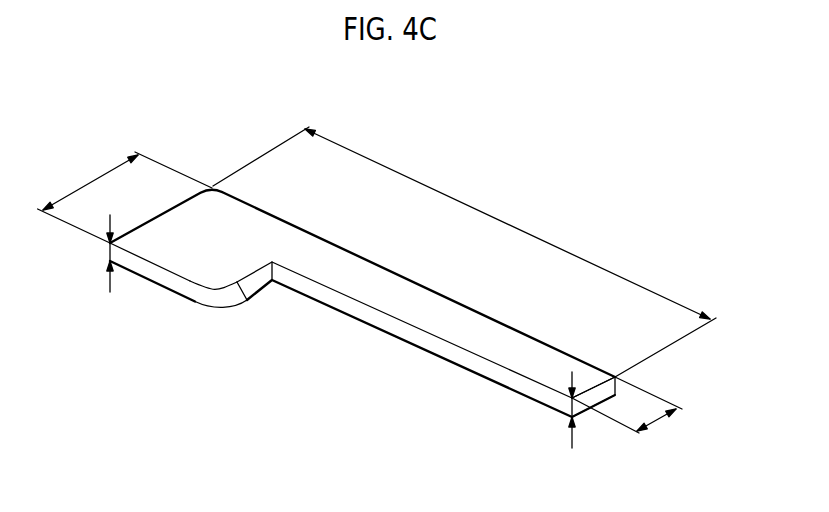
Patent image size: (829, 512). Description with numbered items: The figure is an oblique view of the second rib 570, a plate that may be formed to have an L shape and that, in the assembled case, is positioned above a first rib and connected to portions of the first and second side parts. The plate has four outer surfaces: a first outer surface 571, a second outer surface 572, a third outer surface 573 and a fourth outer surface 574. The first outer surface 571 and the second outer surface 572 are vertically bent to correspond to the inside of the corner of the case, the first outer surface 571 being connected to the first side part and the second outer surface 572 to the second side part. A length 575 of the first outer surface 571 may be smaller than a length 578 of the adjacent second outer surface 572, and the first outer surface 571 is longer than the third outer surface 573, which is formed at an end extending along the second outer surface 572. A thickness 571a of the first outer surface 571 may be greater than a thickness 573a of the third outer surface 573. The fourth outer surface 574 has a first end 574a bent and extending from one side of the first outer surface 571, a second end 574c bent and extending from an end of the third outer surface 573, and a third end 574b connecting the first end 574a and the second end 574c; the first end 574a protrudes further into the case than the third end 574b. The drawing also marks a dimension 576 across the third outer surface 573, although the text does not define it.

The second rib 570 is at (687, 134).
The first outer surface 571 is at (180, 204).
The thickness of first outer surface 571a is at (82, 260).
The second outer surface 572 is at (413, 282).
The third outer surface 573 is at (601, 394).
The thickness of third outer surface 573a is at (600, 421).
The fourth outer surface 574 is at (328, 367).
The first end of fourth outer surface 574a is at (170, 291).
The third end of fourth outer surface 574b is at (247, 296).
The second end of fourth outer surface 574c is at (335, 302).
The length of first outer surface 575 is at (125, 197).
The width of end portion 576 is at (636, 414).
The length of second outer surface 578 is at (464, 252).